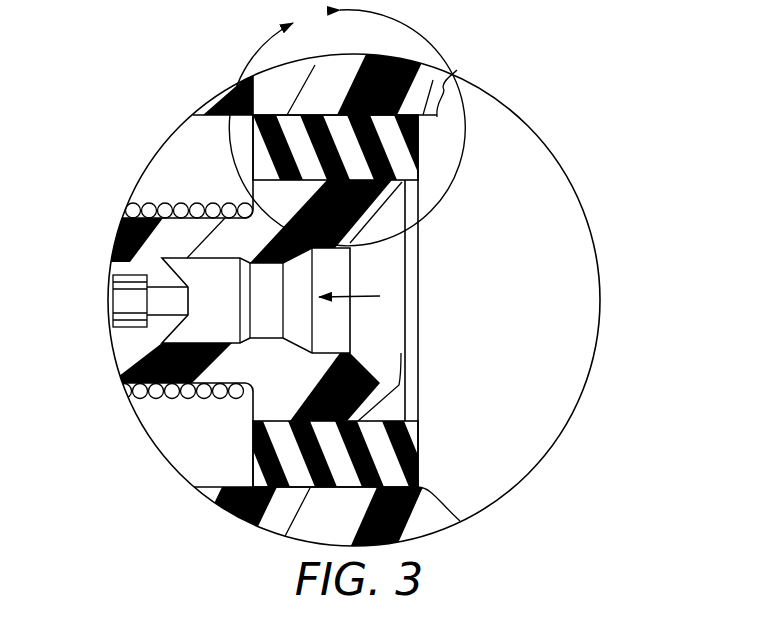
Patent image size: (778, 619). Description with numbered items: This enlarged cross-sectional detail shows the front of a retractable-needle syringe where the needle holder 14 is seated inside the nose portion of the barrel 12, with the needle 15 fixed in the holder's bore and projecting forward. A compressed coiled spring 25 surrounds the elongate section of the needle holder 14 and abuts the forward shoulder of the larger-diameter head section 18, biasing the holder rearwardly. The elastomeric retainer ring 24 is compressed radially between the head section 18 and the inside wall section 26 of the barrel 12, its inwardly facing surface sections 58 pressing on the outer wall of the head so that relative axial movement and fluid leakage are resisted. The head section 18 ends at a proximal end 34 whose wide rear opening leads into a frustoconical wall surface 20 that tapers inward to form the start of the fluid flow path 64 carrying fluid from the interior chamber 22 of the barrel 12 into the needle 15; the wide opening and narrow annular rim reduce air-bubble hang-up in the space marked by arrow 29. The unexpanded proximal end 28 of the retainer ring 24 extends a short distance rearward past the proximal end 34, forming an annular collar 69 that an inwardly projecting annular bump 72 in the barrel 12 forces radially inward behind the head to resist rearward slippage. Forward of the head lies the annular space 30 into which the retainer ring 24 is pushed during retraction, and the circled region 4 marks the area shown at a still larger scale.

The section view indicator circle 4 is at (347, 123).
The barrel 12 is at (422, 97).
The needle holder 14 is at (142, 263).
The needle 15 is at (113, 327).
The head section 18 is at (280, 395).
The frustoconical wall surface 20 is at (417, 350).
The interior chamber 22 is at (543, 187).
The elastomeric retainer ring 24 is at (280, 127).
The coiled spring 25 is at (155, 206).
The inside wall section 26 is at (207, 137).
The proximal end of retainer ring 28 is at (417, 453).
The space identified by arrow 29 is at (418, 191).
The annular space 30 is at (173, 443).
The proximal end 34 is at (405, 313).
The inwardly facing surface sections 58 is at (250, 197).
The fluid flow path 64 is at (380, 296).
The annular collar 69 is at (410, 393).
The annular bump 72 is at (420, 118).